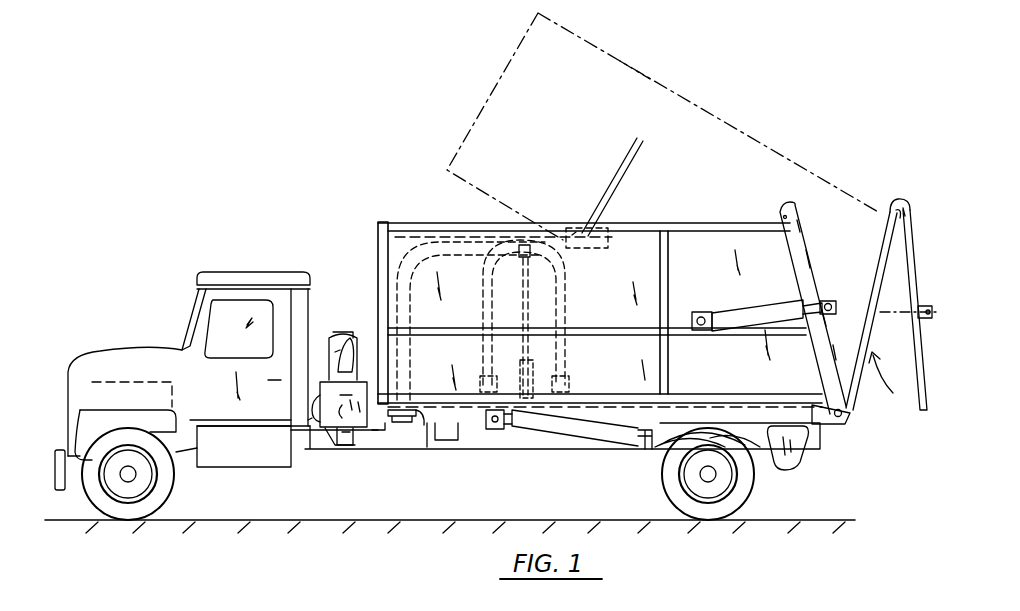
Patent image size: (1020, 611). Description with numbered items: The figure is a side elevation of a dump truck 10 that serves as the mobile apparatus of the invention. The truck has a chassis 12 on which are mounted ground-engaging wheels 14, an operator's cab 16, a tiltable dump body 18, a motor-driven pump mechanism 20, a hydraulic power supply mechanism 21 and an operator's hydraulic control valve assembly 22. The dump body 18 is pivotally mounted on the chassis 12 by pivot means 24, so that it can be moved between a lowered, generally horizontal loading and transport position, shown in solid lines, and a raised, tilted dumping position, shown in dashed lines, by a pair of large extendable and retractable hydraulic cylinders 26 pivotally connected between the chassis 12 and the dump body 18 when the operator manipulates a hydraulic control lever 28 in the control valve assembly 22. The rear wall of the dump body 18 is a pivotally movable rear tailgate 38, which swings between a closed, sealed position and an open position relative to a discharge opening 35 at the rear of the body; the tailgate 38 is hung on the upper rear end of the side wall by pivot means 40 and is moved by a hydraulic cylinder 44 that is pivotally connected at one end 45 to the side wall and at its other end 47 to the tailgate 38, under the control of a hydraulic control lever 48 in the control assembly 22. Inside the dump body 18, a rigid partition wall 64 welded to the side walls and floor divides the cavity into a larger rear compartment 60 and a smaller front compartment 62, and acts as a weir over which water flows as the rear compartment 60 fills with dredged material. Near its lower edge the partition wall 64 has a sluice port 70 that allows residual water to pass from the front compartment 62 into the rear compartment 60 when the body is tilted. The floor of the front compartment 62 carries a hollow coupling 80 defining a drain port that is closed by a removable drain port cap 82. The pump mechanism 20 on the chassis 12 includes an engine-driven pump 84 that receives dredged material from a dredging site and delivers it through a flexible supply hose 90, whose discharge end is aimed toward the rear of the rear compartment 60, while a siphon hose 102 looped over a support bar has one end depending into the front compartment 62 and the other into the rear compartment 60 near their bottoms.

The dump truck 10 is at (237, 256).
The chassis 12 is at (493, 433).
The ground-engaging wheels 14 is at (165, 492).
The operator's cab 16 is at (192, 312).
The tiltable dump body 18 is at (490, 95).
The motor-driven pump mechanism 20 is at (340, 322).
The hydraulic power supply mechanism 21 is at (308, 420).
The operator's hydraulic control valve assembly 22 is at (345, 440).
The pivot means 24 is at (845, 415).
The hydraulic cylinders 26 is at (600, 412).
The hydraulic control lever 28 is at (342, 443).
The discharge opening 35 is at (884, 384).
The rear tailgate 38 is at (804, 241).
The pivot means 40 is at (785, 218).
The hydraulic cylinder 44 is at (777, 306).
The cylinder end 45 is at (700, 314).
The cylinder end 47 is at (832, 305).
The hydraulic control lever 48 is at (356, 436).
The rear compartment 60 is at (800, 135).
The front compartment 62 is at (653, 45).
The partition wall 64 is at (640, 134).
The sluice port 70 is at (535, 386).
The hollow coupling 80 is at (418, 428).
The drain port cap 82 is at (404, 432).
The pump 84 is at (335, 352).
The flexible supply hose 90 is at (440, 237).
The siphon hose 102 is at (570, 285).